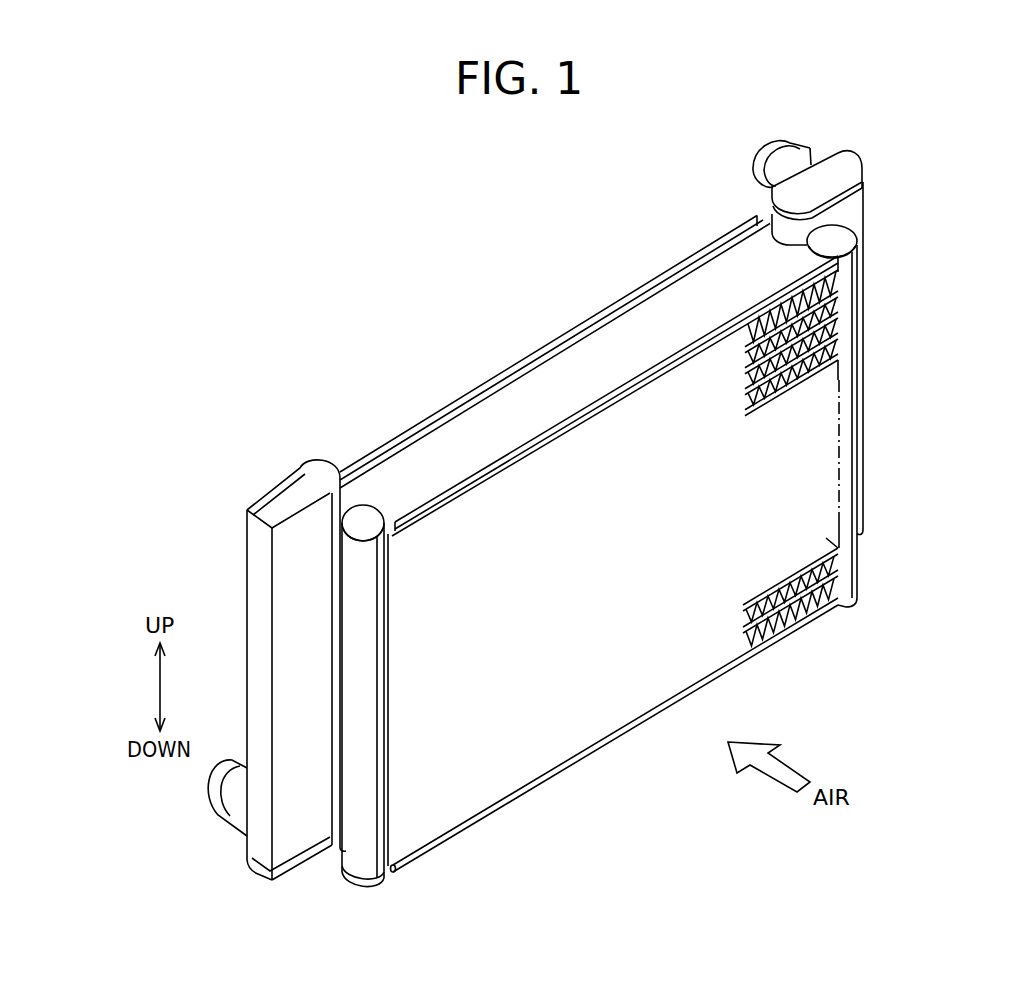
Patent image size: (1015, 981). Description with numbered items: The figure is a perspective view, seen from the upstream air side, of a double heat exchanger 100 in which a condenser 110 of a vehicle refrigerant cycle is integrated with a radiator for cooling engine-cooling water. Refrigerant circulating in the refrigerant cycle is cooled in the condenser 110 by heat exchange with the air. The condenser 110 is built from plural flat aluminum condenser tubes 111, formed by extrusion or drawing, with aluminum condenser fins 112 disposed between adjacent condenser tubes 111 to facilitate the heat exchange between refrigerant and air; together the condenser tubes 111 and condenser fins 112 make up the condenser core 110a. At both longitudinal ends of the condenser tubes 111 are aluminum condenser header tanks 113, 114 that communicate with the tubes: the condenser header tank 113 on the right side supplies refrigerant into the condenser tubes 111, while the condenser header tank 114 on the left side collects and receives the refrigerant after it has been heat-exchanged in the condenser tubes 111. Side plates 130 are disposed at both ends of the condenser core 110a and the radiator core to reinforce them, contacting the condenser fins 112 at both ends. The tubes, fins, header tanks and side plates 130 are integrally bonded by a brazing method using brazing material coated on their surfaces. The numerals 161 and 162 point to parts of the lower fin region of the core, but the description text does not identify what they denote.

The double heat exchanger 100 is at (563, 514).
The condenser 110 is at (607, 622).
The condenser core 110a is at (495, 690).
The condenser tubes 111 is at (836, 308).
The condenser fins 112 is at (859, 250).
The condenser header tank 113 is at (845, 378).
The condenser header tank 114 is at (352, 566).
The side plates 130 is at (503, 363).
The lower fin 161 is at (757, 632).
The lower tube 162 is at (808, 600).